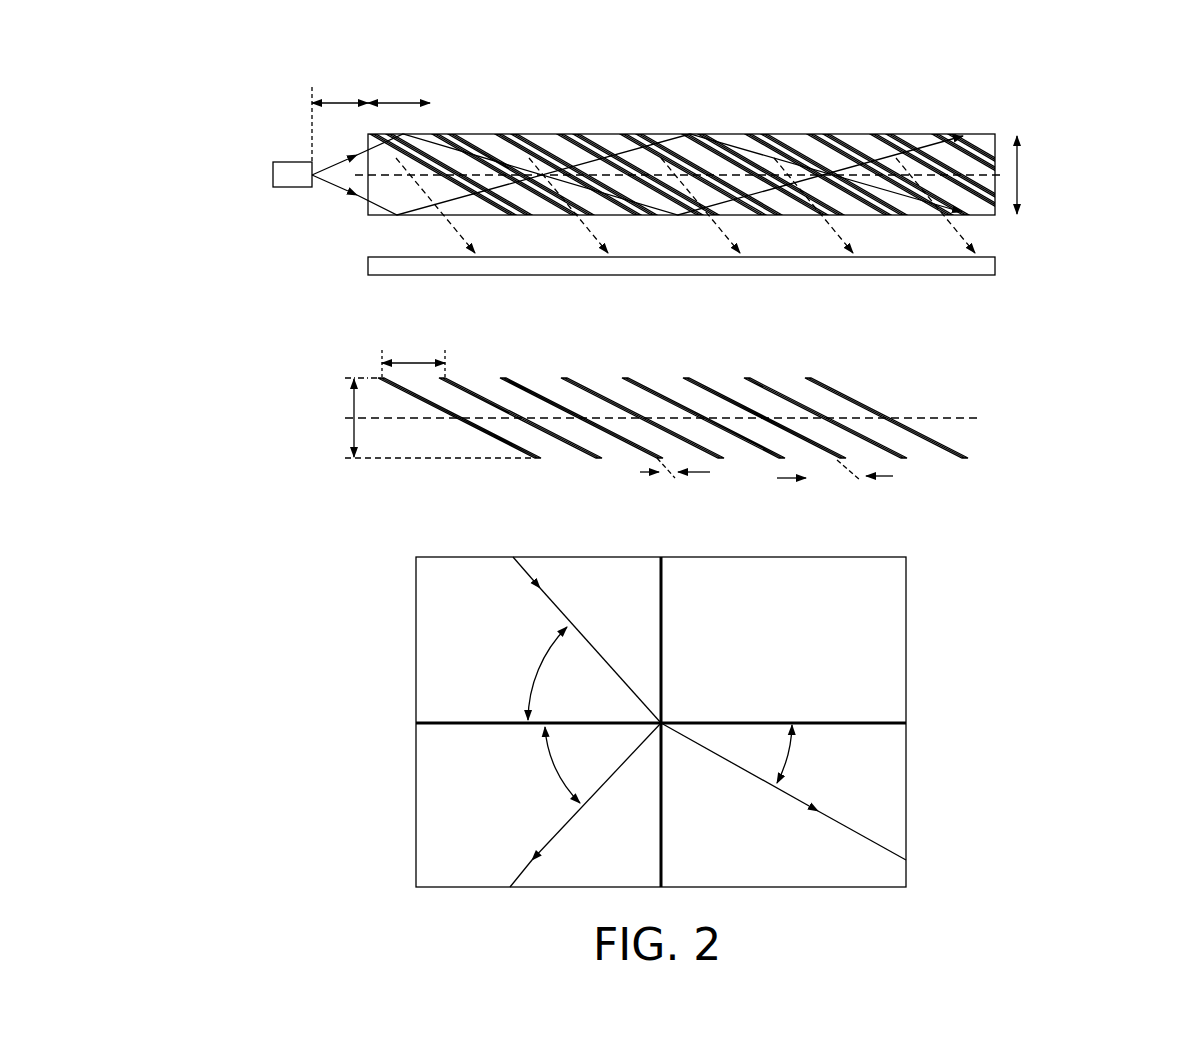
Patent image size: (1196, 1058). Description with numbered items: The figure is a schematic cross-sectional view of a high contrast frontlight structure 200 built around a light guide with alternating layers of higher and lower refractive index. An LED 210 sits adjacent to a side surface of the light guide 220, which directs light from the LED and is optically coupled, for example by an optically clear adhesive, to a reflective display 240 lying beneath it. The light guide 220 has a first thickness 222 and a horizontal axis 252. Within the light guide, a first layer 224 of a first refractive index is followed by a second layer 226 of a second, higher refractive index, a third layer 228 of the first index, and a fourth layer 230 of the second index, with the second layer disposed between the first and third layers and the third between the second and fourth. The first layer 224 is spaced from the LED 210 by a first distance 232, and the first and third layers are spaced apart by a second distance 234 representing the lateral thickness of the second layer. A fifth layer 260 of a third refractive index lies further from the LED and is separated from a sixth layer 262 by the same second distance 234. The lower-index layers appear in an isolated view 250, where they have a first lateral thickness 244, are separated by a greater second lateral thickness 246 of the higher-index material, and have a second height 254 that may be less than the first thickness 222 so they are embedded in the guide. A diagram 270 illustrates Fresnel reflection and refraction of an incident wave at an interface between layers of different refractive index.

The high contrast frontlight structure 200 is at (1093, 92).
The LED 210 is at (272, 175).
The light guide 220 is at (888, 134).
The first thickness 222 is at (1022, 171).
The first layer 224 is at (512, 216).
The second layer 226 is at (547, 203).
The third layer 228 is at (590, 212).
The fourth layer 230 is at (615, 205).
The first distance 232 is at (340, 102).
The second distance 234 is at (385, 102).
The reflective display 240 is at (997, 270).
The first lateral thickness 244 is at (686, 489).
The second lateral thickness 246 is at (846, 489).
The isolated view 250 is at (1063, 390).
The horizontal axis 252 is at (962, 175).
The second height 254 is at (350, 385).
The fifth layer 260 is at (760, 377).
The sixth layer 262 is at (830, 382).
The diagram 270 is at (963, 625).